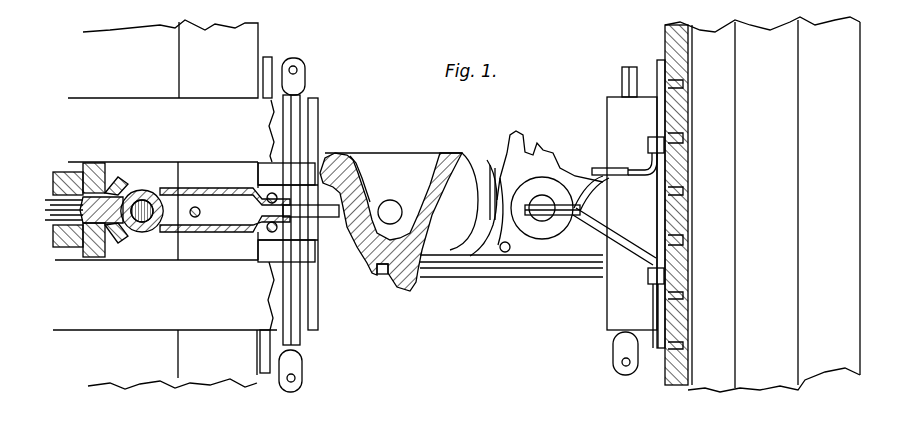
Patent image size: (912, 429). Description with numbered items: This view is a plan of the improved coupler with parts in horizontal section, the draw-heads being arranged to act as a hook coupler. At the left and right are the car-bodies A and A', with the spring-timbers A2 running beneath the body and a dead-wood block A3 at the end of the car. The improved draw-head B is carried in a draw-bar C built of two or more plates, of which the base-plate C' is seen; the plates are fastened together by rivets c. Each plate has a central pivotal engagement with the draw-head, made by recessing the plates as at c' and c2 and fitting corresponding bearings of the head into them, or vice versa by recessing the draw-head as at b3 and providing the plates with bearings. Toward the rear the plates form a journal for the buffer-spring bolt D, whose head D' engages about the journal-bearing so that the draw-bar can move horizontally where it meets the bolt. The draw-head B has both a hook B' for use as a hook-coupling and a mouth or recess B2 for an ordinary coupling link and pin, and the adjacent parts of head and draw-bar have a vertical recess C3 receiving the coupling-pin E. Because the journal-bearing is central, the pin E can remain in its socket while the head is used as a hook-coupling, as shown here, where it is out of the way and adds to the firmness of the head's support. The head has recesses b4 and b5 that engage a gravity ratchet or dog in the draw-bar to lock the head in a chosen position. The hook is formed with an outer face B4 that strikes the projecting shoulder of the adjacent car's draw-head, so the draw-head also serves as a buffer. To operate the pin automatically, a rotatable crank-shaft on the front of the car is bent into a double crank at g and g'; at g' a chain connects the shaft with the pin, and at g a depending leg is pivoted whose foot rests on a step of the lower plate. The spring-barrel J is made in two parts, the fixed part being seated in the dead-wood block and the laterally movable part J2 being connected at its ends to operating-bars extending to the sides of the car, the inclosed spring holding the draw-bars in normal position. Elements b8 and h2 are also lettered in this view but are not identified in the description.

The car-body A is at (163, 59).
The car-body A' is at (762, 204).
The spring-timbers A2 is at (165, 244).
The dead-wood block A3 is at (319, 301).
The draw-head B is at (461, 211).
The mouth or recess B2 is at (400, 187).
The hook B' is at (460, 212).
The outer face of hook B4 is at (459, 206).
The draw-bar C is at (295, 212).
The base-plate C' is at (212, 213).
The vertical recess C3 is at (396, 210).
The buffer-spring bolt D is at (167, 211).
The head of bolt D' is at (139, 207).
The coupling-pin E is at (542, 208).
The spring-barrel J is at (310, 360).
The movable portion of spring-barrel J2 is at (305, 84).
The draw-head recess b3 is at (513, 214).
The draw-head recess b4 is at (325, 245).
The draw-head recess b5 is at (386, 277).
The pivot hole b8 is at (513, 250).
The rivets c is at (618, 277).
The recess in base-plate c' is at (641, 308).
The recess in top plate c2 is at (613, 345).
The crank of crank-shaft g is at (619, 174).
The crank of crank-shaft g' is at (556, 200).
The post h2 is at (622, 82).